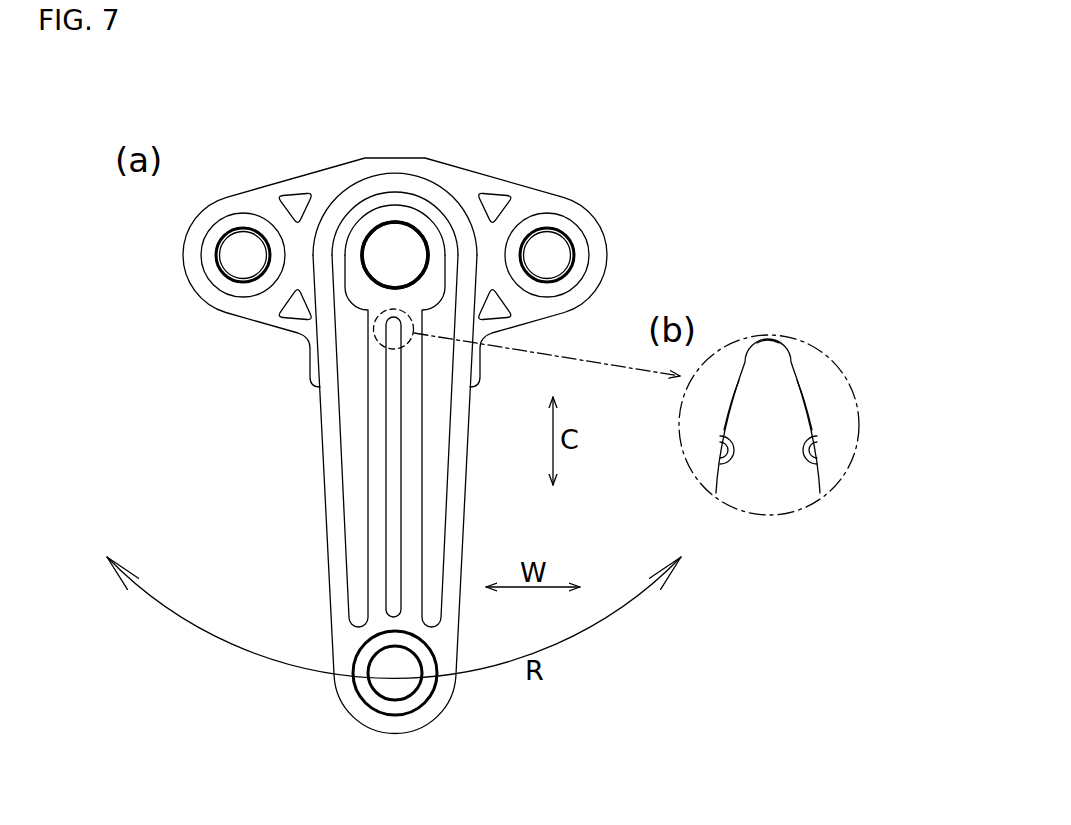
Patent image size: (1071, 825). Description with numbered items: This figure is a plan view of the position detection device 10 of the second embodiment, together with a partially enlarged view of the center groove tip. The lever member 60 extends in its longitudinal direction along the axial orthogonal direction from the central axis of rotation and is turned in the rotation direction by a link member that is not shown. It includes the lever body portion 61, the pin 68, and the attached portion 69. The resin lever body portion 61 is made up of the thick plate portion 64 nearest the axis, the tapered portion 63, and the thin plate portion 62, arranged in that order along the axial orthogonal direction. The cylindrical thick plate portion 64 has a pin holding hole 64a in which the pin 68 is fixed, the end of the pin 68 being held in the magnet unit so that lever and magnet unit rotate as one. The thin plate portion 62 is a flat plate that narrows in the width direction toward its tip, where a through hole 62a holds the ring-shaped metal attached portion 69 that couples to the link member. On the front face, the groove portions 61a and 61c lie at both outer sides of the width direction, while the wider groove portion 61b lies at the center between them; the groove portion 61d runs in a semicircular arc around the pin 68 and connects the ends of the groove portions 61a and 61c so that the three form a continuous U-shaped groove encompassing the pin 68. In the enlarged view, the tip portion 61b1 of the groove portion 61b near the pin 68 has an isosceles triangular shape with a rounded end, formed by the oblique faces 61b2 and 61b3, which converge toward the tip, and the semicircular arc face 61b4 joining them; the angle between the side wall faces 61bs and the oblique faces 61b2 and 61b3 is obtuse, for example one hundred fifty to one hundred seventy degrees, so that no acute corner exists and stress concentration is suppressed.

The position detection device 10 is at (569, 168).
The lever member 60 is at (340, 191).
The lever body portion 61 is at (85, 323).
The groove portion 61a is at (353, 422).
The groove portion 61b is at (390, 474).
The tip portion 61b1 is at (398, 320).
The oblique face 61b2 is at (805, 398).
The oblique face 61b3 is at (739, 388).
The semicircular arc face 61b4 is at (768, 338).
The side wall face 61bs is at (717, 477).
The groove portion 61c is at (428, 507).
The groove portion 61d is at (410, 203).
The thin plate portion 62 is at (337, 507).
The through hole 62a is at (360, 647).
The tapered portion 63 is at (328, 353).
The thick plate portion 64 is at (322, 245).
The pin holding hole 64a is at (383, 222).
The pin 68 is at (403, 253).
The attached portion 69 is at (362, 687).